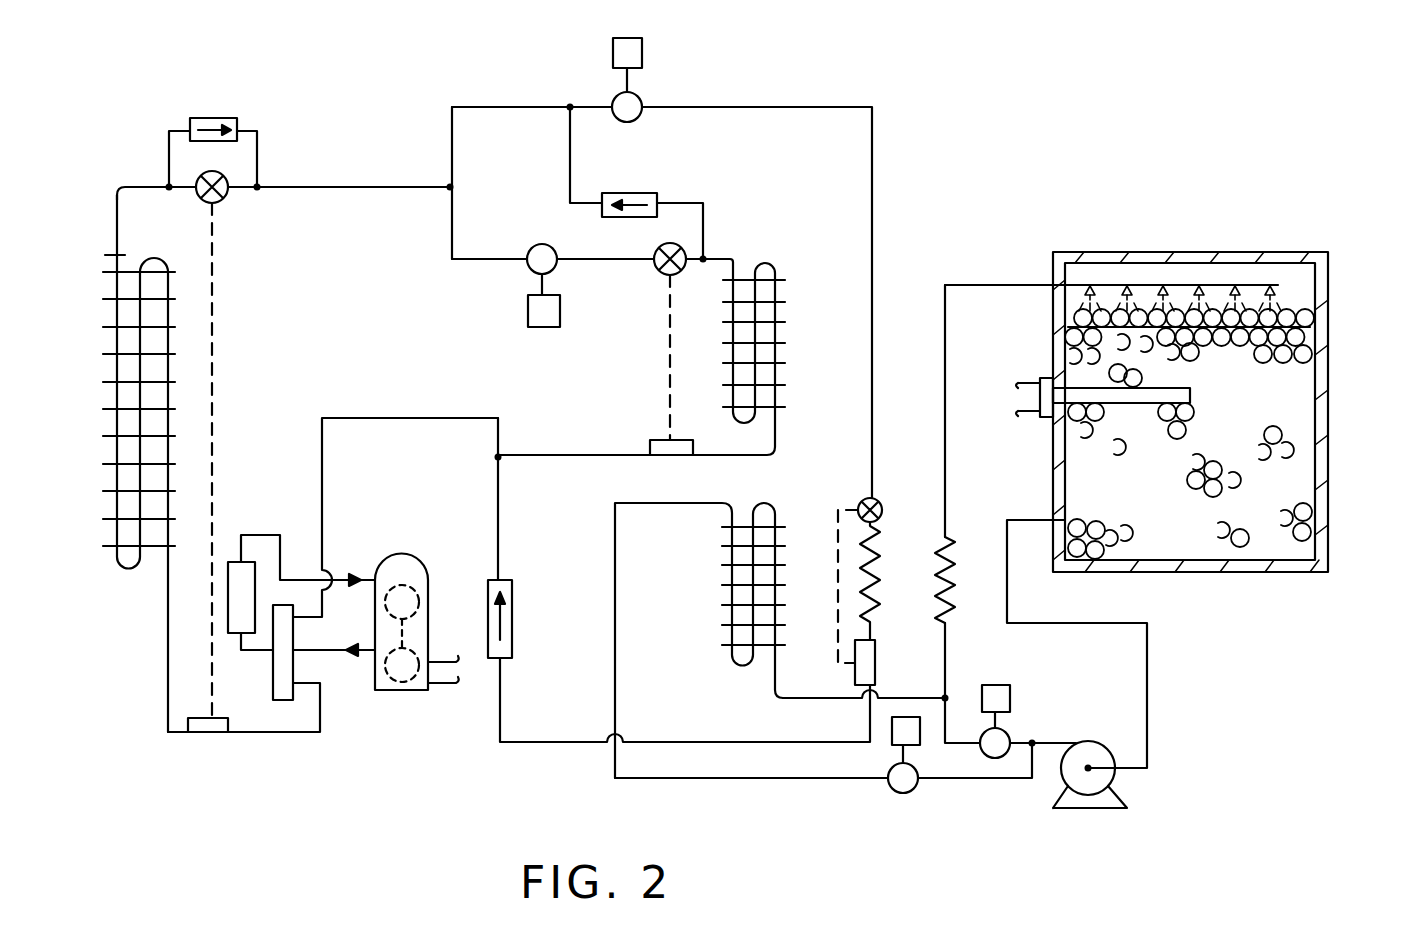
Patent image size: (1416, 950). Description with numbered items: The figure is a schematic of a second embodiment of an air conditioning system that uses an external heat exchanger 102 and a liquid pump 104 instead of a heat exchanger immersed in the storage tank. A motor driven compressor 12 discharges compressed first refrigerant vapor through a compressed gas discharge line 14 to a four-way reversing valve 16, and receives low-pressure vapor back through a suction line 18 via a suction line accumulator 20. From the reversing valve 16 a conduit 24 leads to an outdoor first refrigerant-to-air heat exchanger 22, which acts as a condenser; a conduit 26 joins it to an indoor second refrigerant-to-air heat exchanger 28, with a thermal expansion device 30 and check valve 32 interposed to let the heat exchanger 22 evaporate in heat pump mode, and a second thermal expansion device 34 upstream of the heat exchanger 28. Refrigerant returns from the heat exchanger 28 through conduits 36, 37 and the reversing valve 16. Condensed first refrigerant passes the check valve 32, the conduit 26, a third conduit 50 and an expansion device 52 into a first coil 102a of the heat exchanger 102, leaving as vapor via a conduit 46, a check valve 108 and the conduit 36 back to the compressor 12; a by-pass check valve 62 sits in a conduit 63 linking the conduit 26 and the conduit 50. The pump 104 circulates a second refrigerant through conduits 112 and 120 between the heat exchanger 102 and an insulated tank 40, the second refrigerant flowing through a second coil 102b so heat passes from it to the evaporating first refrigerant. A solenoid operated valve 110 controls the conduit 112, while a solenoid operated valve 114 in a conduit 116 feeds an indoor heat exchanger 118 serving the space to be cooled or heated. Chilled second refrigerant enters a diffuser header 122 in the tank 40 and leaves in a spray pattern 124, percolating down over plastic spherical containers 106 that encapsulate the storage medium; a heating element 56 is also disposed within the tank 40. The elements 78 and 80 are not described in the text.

The compressor 12 is at (420, 560).
The compressed gas discharge line 14 is at (330, 655).
The four-way reversing valve 16 is at (274, 700).
The suction line 18 is at (249, 535).
The suction line accumulator 20 is at (228, 635).
The first refrigerant-to-air heat exchanger 22 is at (170, 343).
The conduit 24 is at (166, 716).
The conduit 26 is at (342, 186).
The second refrigerant-to-air heat exchanger 28 is at (780, 332).
The thermal expansion device 30 is at (228, 200).
The check valve 32 is at (227, 118).
The second thermal expansion device 34 is at (660, 274).
The conduit 36 is at (382, 417).
The conduit 37 is at (569, 454).
The insulated tank 40 is at (1053, 335).
The refrigerant fluid transfer conduit 46 is at (500, 553).
The third conduit 50 is at (760, 105).
The thermal expansion device 52 is at (882, 508).
The heating element 56 is at (1190, 395).
The by-pass-type check valve 62 is at (628, 193).
The conduit 63 is at (569, 167).
The pump/sensor 78 is at (538, 244).
The pump/sensor 80 is at (613, 96).
The heat exchanger 102 is at (925, 606).
The first coil 102a is at (860, 545).
The second coil 102b is at (957, 548).
The pump 104 is at (1110, 780).
The containers 106 is at (1312, 345).
The check valve 108 is at (513, 615).
The solenoid operated valve 110 is at (1012, 730).
The conduit 112 is at (950, 452).
The solenoid operated valve 114 is at (911, 790).
The conduit 116 is at (792, 700).
The indoor heat exchanger 118 is at (732, 598).
The conduit 120 is at (1150, 668).
The diffuser header 122 is at (1145, 283).
The spray pattern 124 is at (1282, 297).